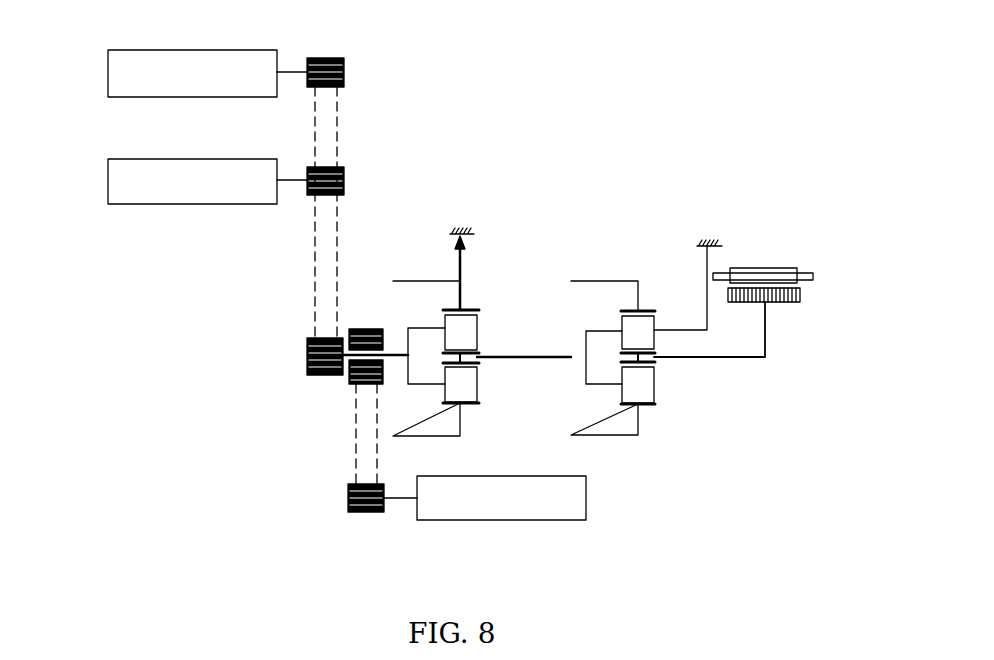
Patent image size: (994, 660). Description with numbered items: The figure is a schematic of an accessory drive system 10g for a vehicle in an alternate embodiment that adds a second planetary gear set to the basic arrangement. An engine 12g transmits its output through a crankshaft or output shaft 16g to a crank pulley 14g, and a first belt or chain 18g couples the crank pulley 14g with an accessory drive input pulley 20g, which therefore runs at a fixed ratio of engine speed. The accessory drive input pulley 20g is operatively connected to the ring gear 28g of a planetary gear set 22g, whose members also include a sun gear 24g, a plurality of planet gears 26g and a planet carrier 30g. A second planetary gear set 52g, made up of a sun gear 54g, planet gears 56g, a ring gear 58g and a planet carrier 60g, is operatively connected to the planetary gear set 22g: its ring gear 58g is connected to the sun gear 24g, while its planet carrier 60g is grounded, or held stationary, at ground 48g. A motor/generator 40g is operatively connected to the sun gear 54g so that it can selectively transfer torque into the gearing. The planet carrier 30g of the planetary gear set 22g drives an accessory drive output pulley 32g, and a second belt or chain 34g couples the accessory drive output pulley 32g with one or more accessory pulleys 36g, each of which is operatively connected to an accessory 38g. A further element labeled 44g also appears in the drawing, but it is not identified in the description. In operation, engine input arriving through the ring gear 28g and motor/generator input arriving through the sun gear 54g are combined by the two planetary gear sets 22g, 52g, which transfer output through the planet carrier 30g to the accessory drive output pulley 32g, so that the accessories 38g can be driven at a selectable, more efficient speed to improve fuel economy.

The accessory drive system 10g is at (667, 100).
The engine 12g is at (553, 520).
The crank pulley 14g is at (358, 512).
The output shaft 16g is at (400, 498).
The first belt or chain 18g is at (355, 455).
The accessory drive input pulley 20g is at (365, 329).
The planetary gear set 22g is at (481, 360).
The sun gear 24g is at (478, 352).
The planet gears 26g is at (455, 335).
The ring gear 28g is at (470, 310).
The planet carrier 30g is at (425, 385).
The accessory drive output pulley 32g is at (307, 348).
The second belt or chain 34g is at (338, 250).
The accessory pulleys 36g is at (330, 58).
The accessories 38g is at (118, 50).
The motor/generator 40g is at (781, 262).
The shaft 44g is at (470, 244).
The ground 48g is at (463, 230).
The second planetary gear set 52g is at (669, 348).
The sun gear 54g is at (645, 354).
The planet gears 56g is at (632, 328).
The ring gear 58g is at (645, 311).
The planet carrier 60g is at (597, 384).